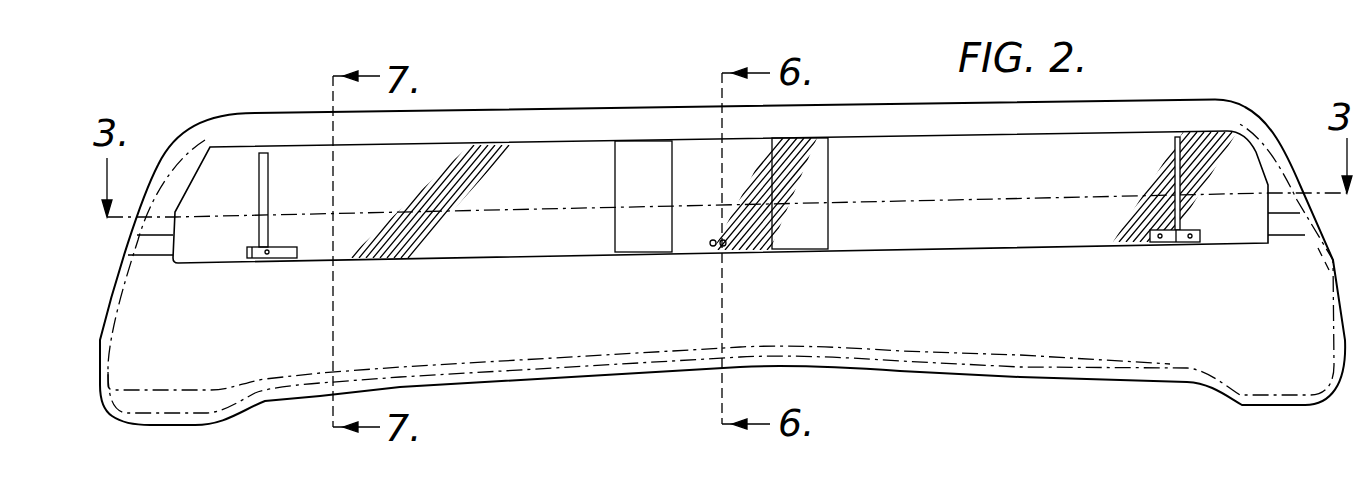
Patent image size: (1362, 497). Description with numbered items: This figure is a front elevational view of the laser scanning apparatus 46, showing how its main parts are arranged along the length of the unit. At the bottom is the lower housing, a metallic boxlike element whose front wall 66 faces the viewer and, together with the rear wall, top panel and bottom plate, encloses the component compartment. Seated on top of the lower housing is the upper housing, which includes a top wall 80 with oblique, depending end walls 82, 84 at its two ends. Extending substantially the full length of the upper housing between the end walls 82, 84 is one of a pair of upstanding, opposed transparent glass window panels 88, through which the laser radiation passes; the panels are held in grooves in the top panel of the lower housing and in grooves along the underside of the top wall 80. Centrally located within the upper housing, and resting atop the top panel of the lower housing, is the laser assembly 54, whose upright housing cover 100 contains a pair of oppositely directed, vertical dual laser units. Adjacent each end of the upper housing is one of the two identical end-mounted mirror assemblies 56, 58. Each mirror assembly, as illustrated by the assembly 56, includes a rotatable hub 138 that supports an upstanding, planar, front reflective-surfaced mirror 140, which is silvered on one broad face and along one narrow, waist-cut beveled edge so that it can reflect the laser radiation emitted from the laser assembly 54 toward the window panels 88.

The apparatus 46 is at (1206, 82).
The laser assembly 54 is at (830, 158).
The mirror assembly 56 is at (247, 189).
The mirror assembly 58 is at (1168, 138).
The front wall 66 is at (990, 323).
The top wall 80 is at (552, 118).
The end wall 82 is at (168, 177).
The end wall 84 is at (1275, 160).
The transparent glass window panel 88 is at (930, 150).
The upright housing cover 100 is at (691, 153).
The rotatable hub 138 is at (288, 258).
The mirror 140 is at (262, 190).